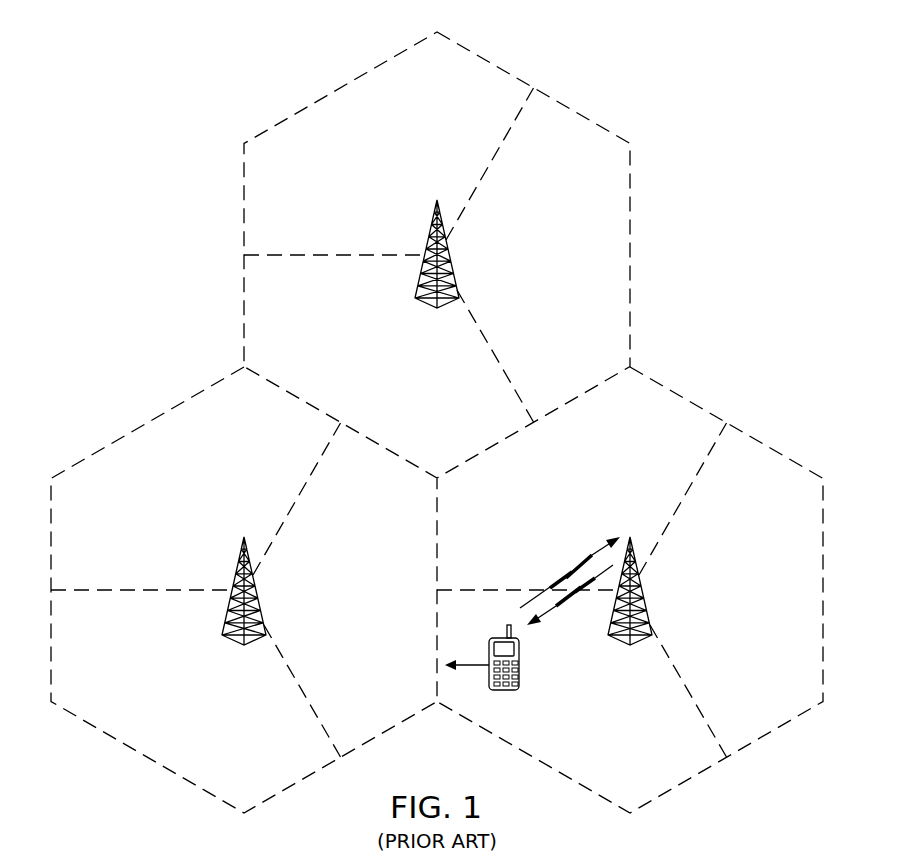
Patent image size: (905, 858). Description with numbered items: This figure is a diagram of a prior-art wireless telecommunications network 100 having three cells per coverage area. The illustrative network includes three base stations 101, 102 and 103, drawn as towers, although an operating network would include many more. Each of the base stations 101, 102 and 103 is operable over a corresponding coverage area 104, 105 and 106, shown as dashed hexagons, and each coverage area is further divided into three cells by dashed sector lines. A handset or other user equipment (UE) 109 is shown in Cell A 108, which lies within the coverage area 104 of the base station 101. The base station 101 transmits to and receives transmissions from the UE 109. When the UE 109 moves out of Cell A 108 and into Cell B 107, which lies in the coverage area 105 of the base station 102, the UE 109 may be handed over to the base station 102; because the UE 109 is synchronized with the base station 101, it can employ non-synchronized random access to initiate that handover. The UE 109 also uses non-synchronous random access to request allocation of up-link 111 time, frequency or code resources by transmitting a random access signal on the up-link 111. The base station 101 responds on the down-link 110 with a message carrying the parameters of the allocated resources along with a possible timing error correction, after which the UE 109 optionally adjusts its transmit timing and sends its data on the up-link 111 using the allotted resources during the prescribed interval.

The wireless telecommunications network 100 is at (243, 42).
The base station 101 is at (655, 612).
The base station 102 is at (236, 570).
The base station 103 is at (432, 235).
The coverage area 104 is at (697, 777).
The coverage area 105 is at (155, 762).
The coverage area 106 is at (565, 105).
The Cell B 107 is at (377, 621).
The Cell A 108 is at (648, 778).
The user equipment (UE) 109 is at (521, 672).
The down-link 110 is at (555, 613).
The up-link 111 is at (578, 563).